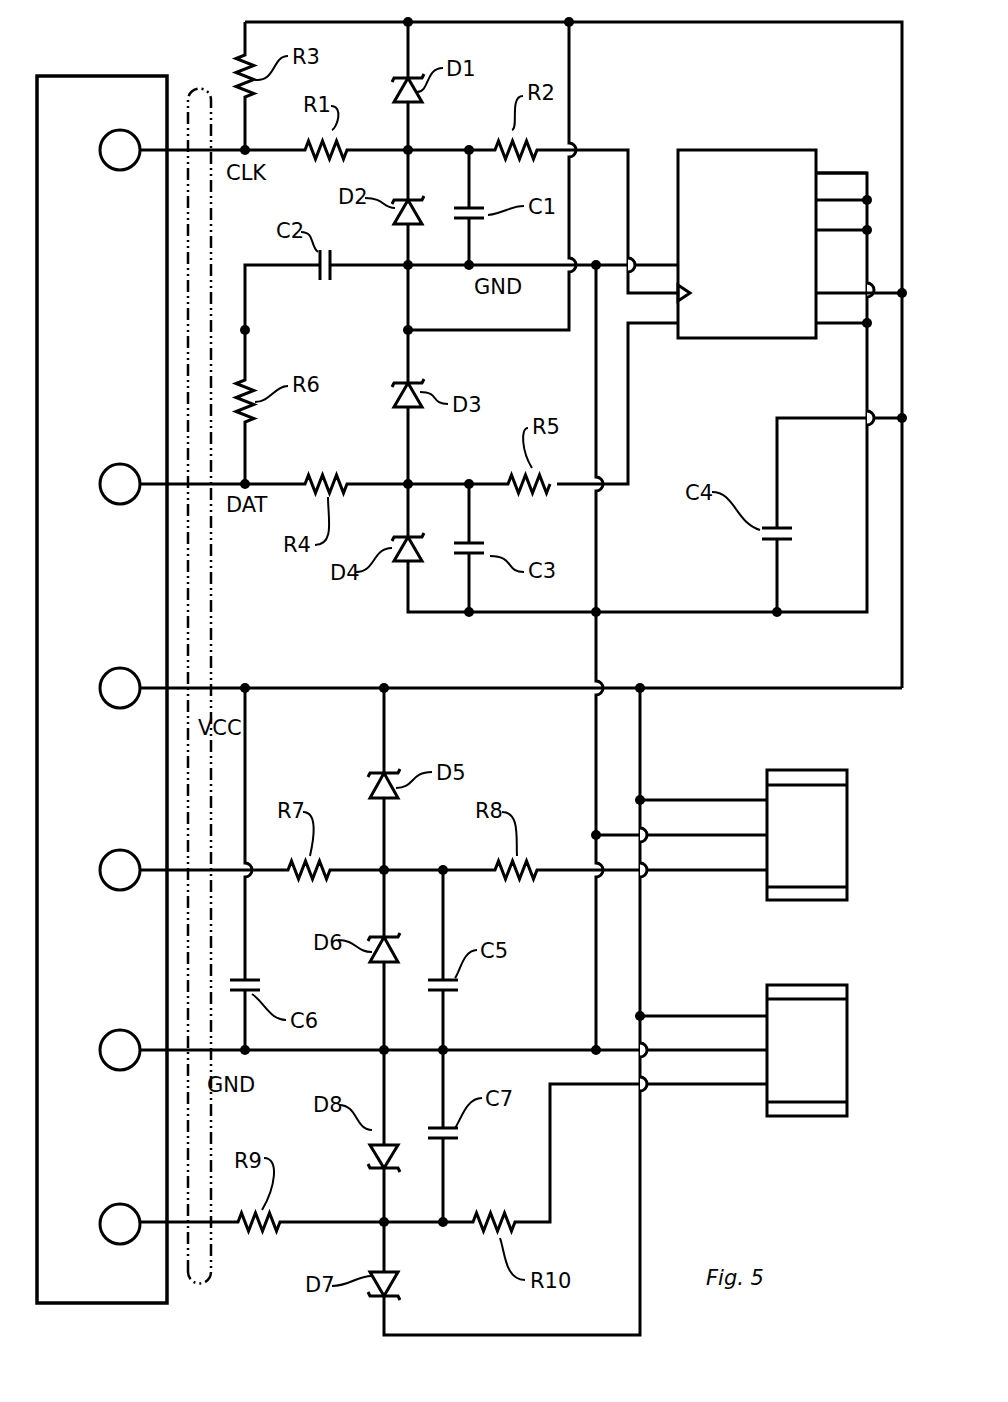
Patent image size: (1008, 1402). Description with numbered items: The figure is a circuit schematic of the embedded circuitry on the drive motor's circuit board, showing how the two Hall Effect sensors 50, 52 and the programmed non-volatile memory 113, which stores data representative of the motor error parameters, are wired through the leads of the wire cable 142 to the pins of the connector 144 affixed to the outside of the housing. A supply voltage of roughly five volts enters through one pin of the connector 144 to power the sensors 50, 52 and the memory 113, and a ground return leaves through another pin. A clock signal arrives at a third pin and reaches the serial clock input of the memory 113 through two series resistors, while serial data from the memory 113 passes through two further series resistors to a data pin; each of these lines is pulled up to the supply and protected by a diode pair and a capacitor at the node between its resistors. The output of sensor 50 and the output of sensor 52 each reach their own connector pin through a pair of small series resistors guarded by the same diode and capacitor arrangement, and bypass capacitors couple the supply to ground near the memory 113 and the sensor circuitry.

The connector 144 is at (101, 76).
The wire cable 142 is at (200, 88).
The EEPROM 113 is at (757, 150).
The Hall Effect sensor 50 is at (808, 770).
The Hall Effect sensor 52 is at (803, 1116).